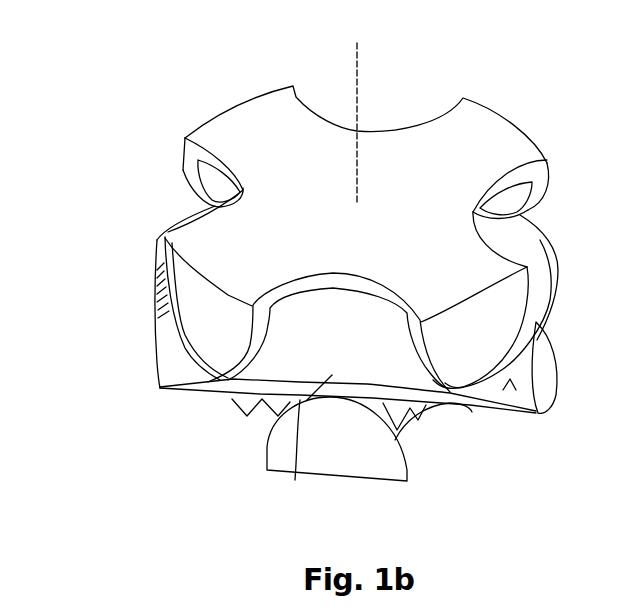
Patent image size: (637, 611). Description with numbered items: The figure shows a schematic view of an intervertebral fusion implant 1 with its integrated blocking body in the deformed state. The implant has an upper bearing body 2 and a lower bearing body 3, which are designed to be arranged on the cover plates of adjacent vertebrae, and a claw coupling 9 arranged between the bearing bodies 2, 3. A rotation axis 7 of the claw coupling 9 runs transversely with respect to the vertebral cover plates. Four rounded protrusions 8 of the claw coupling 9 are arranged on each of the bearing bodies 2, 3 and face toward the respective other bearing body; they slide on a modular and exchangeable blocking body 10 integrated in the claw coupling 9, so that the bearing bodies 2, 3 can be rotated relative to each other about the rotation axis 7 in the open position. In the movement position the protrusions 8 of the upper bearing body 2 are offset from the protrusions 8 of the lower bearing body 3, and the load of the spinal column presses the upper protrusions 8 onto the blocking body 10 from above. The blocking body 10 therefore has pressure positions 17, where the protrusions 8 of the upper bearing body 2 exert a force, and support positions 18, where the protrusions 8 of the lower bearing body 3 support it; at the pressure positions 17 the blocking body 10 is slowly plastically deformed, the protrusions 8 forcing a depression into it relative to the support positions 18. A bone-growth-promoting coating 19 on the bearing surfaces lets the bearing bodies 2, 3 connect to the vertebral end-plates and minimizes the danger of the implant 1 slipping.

The intervertebral fusion implant 1 is at (100, 188).
The upper bearing body 2 is at (472, 145).
The lower bearing body 3 is at (522, 413).
The rotation axis 7 is at (360, 52).
The protrusions 8 is at (187, 177).
The claw coupling 9 is at (442, 335).
The blocking body 10 is at (265, 387).
The pressure positions 17 is at (525, 214).
The support positions 18 is at (170, 232).
The coating 19 is at (263, 140).